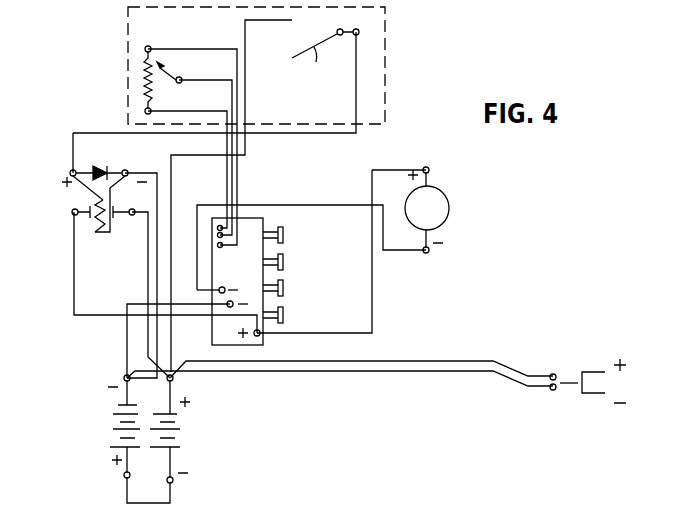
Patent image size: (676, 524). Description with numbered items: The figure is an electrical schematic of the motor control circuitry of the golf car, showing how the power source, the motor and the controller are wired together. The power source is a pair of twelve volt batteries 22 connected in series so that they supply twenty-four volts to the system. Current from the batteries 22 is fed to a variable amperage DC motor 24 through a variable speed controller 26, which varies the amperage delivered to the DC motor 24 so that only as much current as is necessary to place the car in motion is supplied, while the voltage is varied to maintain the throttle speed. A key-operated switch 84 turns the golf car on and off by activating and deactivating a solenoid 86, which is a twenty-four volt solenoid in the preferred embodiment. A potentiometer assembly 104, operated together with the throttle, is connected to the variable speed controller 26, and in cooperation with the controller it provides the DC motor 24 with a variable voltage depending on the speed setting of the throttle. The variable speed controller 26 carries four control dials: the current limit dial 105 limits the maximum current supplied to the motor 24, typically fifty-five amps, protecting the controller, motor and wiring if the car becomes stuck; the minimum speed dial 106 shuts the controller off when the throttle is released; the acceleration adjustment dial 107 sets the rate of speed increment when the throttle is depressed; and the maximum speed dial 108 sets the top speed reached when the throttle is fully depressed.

The twelve volt batteries 22 is at (112, 429).
The variable amperage DC motor 24 is at (445, 206).
The variable speed controller 26 is at (263, 345).
The switch 84 is at (325, 60).
The solenoid 86 is at (88, 186).
The potentiometer assembly 104 is at (141, 83).
The current limit dial 105 is at (283, 240).
The minimum speed dial 106 is at (283, 267).
The acceleration adjustment dial 107 is at (283, 293).
The maximum speed dial 108 is at (283, 320).